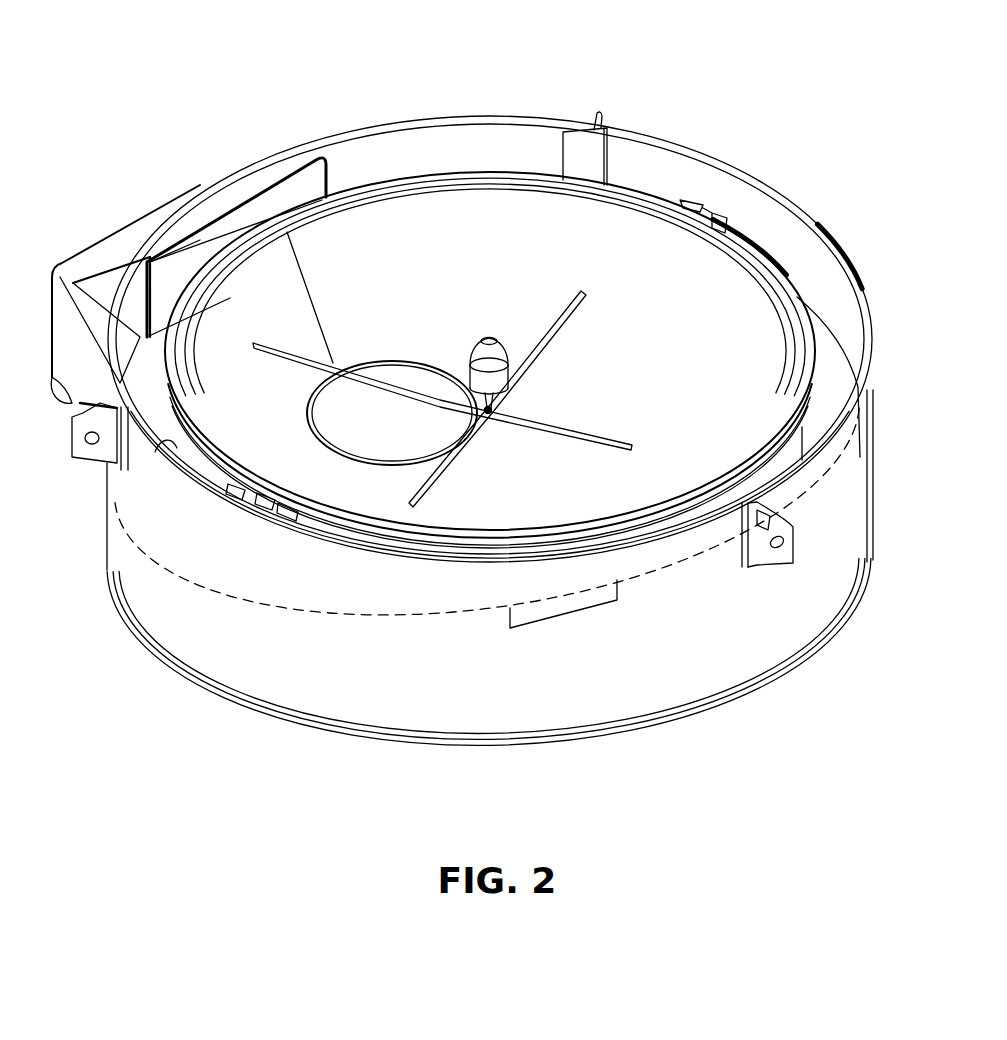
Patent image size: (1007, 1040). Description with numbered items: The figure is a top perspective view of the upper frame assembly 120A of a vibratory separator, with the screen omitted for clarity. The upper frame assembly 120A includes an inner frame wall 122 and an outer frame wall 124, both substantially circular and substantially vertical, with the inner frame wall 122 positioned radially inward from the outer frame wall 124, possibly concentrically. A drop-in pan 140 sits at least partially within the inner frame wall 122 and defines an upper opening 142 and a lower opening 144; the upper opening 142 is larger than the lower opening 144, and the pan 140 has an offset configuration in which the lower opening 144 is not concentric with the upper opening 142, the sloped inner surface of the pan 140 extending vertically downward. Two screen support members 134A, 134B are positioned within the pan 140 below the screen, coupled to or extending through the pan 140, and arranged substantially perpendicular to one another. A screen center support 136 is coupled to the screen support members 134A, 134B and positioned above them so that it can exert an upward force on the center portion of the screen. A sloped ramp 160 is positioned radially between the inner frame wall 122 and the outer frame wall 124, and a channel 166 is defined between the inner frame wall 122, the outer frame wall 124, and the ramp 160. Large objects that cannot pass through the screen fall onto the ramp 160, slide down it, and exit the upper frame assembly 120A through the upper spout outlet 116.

The upper frame assembly 120A is at (211, 68).
The inner frame wall 122 is at (870, 544).
The outer frame wall 124 is at (868, 453).
The upper spout outlet 116 is at (45, 327).
The upper opening 142 is at (490, 202).
The channel 166 is at (789, 259).
The drop-in pan 140 is at (672, 348).
The lower opening 144 is at (397, 362).
The screen support member 134A is at (281, 346).
The screen support member 134B is at (560, 316).
The screen center support 136 is at (487, 338).
The ramp 160 is at (842, 365).